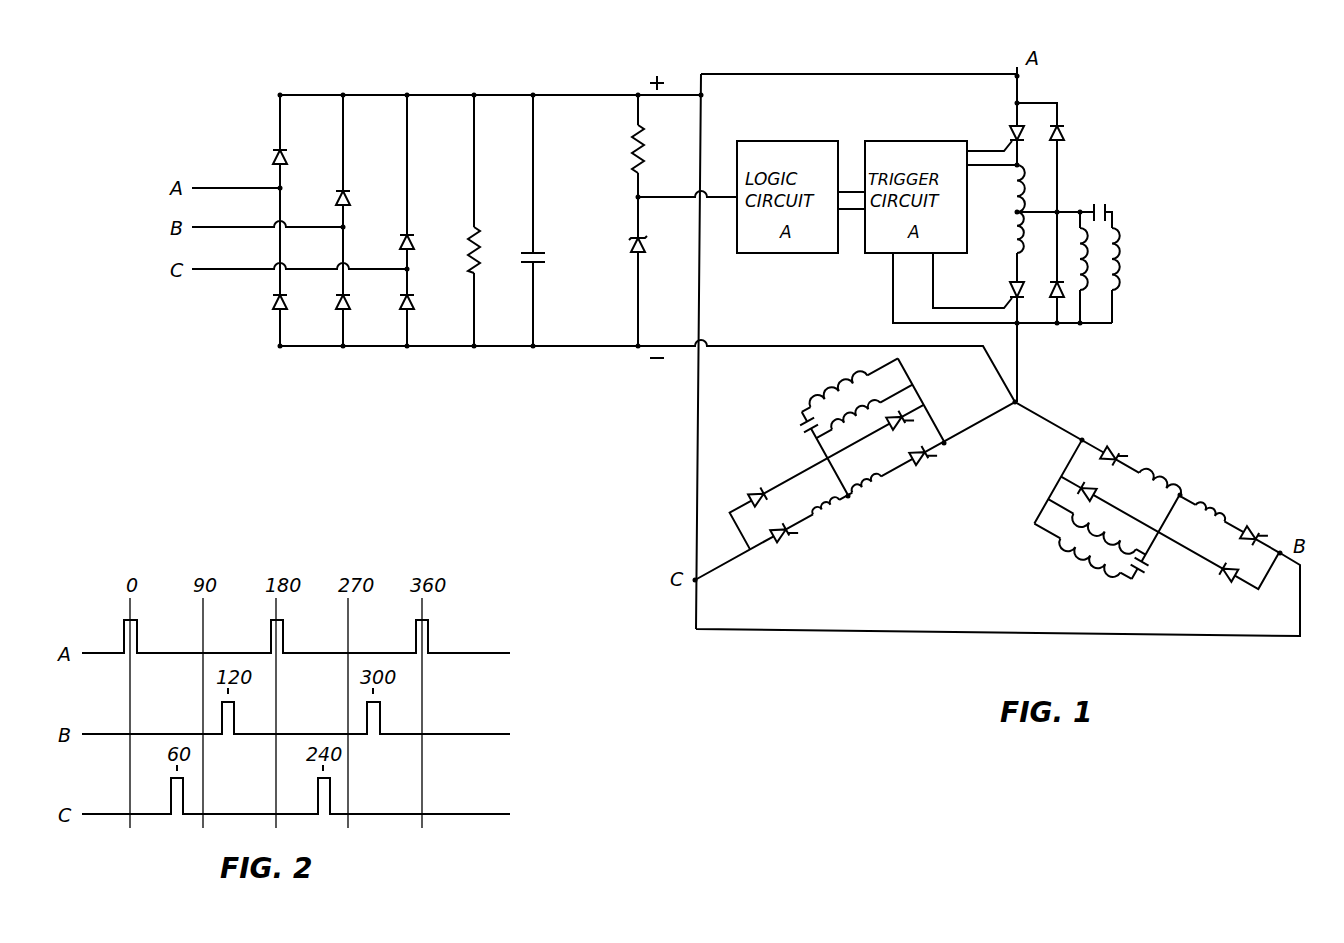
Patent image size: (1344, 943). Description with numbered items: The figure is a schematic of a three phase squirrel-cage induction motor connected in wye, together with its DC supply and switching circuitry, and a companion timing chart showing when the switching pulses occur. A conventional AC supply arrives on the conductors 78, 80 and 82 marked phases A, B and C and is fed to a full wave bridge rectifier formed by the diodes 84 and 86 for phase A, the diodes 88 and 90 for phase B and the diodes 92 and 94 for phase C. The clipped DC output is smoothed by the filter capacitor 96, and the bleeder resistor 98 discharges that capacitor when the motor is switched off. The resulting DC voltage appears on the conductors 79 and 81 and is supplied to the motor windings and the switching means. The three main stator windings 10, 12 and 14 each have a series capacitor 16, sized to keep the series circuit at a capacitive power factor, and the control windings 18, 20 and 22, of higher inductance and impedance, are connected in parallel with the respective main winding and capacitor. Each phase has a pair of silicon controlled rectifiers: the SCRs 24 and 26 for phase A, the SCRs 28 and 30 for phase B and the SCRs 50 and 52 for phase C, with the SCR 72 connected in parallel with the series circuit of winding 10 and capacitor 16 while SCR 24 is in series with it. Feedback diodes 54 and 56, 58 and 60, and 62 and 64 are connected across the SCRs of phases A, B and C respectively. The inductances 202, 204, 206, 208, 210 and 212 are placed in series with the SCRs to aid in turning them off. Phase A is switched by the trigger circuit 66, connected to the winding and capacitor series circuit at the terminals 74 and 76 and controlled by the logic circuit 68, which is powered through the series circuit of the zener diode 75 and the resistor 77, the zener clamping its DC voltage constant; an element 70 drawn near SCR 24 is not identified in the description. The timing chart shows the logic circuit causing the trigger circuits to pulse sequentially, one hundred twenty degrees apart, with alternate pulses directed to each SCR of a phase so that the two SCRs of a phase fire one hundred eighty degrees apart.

The main stator winding 10 is at (1112, 283).
The main stator winding 12 is at (1080, 560).
The main stator winding 14 is at (840, 380).
The series capacitor 16 is at (1105, 210).
The control winding 18 is at (1083, 290).
The control winding 20 is at (1078, 514).
The control winding 22 is at (868, 398).
The silicon controlled rectifier 24 is at (1015, 126).
The silicon controlled rectifier 26 is at (1010, 287).
The silicon controlled rectifier 28 is at (1255, 535).
The silicon controlled rectifier 30 is at (1112, 455).
The silicon controlled rectifier 50 is at (780, 540).
The silicon controlled rectifier 52 is at (920, 462).
The feedback diode 54 is at (1064, 130).
The feedback diode 56 is at (1052, 292).
The feedback diode 58 is at (1095, 489).
The feedback diode 60 is at (1232, 578).
The feedback diode 62 is at (897, 428).
The feedback diode 64 is at (755, 490).
The trigger circuit 66 is at (885, 141).
The logic circuit 68 is at (770, 141).
The gate lead 70 is at (1004, 150).
The silicon controlled rectifier 72 is at (1005, 305).
The terminal 74 is at (1019, 325).
The zener diode 75 is at (645, 250).
The terminal 76 is at (1019, 165).
The resistor 77 is at (630, 148).
The conductor 78 is at (236, 187).
The conductor 79 is at (565, 95).
The conductor 80 is at (250, 226).
The conductor 81 is at (578, 346).
The conductor 82 is at (250, 268).
The diode 84 is at (289, 157).
The diode 86 is at (289, 302).
The diode 88 is at (352, 198).
The diode 90 is at (351, 303).
The diode 92 is at (415, 242).
The diode 94 is at (415, 303).
The filter capacitor 96 is at (545, 255).
The bleeder resistor 98 is at (480, 235).
The inductance 202 is at (1014, 190).
The inductance 204 is at (1014, 237).
The inductance 206 is at (1160, 478).
The inductance 208 is at (1210, 512).
The inductance 210 is at (830, 505).
The inductance 212 is at (870, 485).